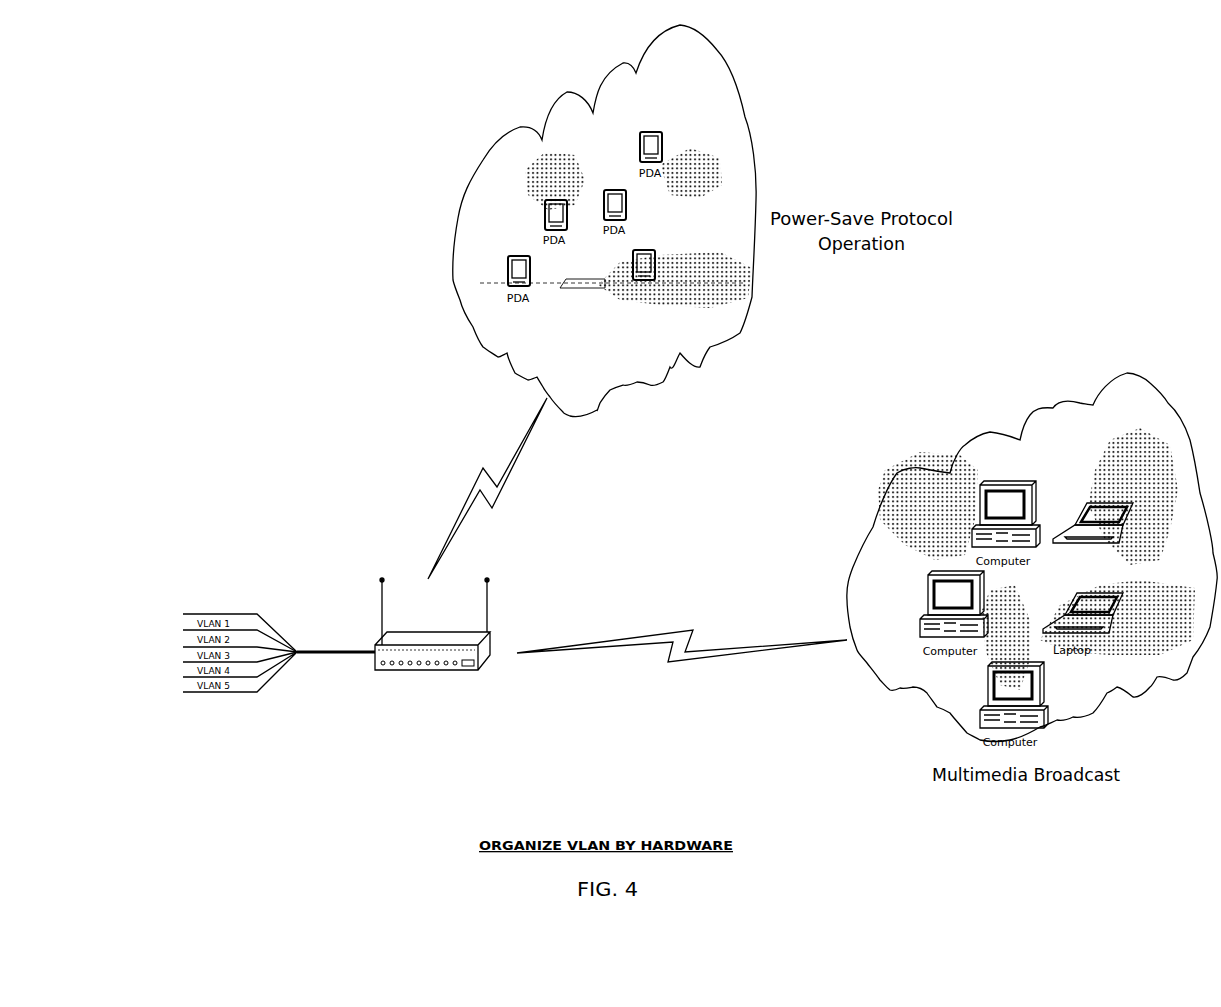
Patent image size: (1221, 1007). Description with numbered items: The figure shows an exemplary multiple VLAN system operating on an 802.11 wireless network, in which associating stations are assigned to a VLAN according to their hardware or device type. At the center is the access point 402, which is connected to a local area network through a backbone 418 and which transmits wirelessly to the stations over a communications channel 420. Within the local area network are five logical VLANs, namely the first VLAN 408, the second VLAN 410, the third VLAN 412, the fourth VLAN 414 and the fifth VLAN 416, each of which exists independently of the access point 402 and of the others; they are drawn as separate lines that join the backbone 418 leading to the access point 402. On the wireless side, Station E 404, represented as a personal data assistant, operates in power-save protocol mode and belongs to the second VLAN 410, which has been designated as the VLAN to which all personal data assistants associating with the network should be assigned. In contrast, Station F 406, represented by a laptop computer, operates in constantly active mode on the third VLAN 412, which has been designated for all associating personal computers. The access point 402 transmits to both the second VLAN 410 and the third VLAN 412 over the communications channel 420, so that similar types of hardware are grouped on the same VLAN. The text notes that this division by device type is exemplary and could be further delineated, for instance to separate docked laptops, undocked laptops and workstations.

The access point 402 is at (443, 632).
The Station E 404 is at (658, 257).
The Station F 406 is at (1122, 530).
The VLAN 1 408 is at (184, 625).
The VLAN 2 410 is at (748, 118).
The VLAN 3 412 is at (1130, 372).
The VLAN 4 414 is at (184, 671).
The VLAN 5 416 is at (184, 686).
The backbone 418 is at (328, 651).
The communications channel 420 is at (478, 480).